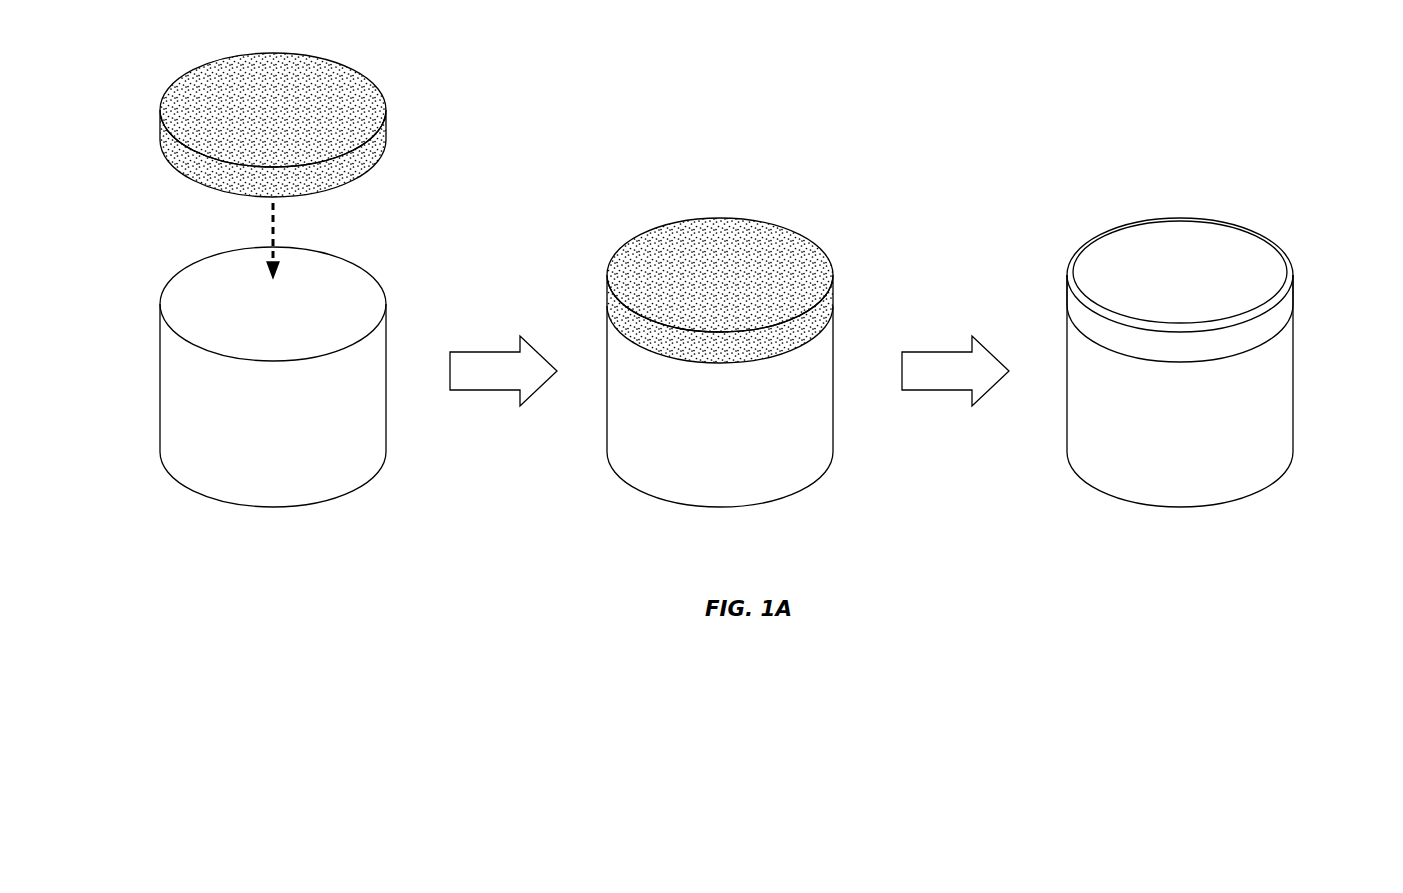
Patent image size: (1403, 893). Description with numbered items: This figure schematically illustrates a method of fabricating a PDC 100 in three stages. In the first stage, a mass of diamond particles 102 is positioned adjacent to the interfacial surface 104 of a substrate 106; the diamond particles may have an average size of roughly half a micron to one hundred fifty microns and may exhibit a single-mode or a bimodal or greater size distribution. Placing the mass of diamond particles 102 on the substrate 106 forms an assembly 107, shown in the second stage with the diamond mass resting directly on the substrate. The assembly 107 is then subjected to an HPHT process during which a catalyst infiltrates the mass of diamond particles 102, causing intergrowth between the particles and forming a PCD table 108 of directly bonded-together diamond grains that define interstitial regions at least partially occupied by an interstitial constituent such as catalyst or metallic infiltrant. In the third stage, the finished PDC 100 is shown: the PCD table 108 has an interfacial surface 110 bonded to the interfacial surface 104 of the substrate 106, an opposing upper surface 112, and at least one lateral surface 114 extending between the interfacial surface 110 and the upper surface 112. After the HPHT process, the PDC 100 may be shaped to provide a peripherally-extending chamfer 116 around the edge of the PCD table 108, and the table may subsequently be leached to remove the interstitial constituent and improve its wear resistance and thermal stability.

The PDC 100 is at (1213, 256).
The mass of diamond particles 102 is at (187, 55).
The interfacial surface of the substrate 104 is at (215, 270).
The substrate 106 is at (323, 432).
The assembly 107 is at (637, 135).
The PCD table 108 is at (1196, 222).
The interfacial surface of the PCD table 110 is at (1250, 352).
The upper surface 112 is at (1130, 255).
The lateral surface 114 is at (1282, 318).
The peripherally-extending chamfer 116 is at (1290, 264).